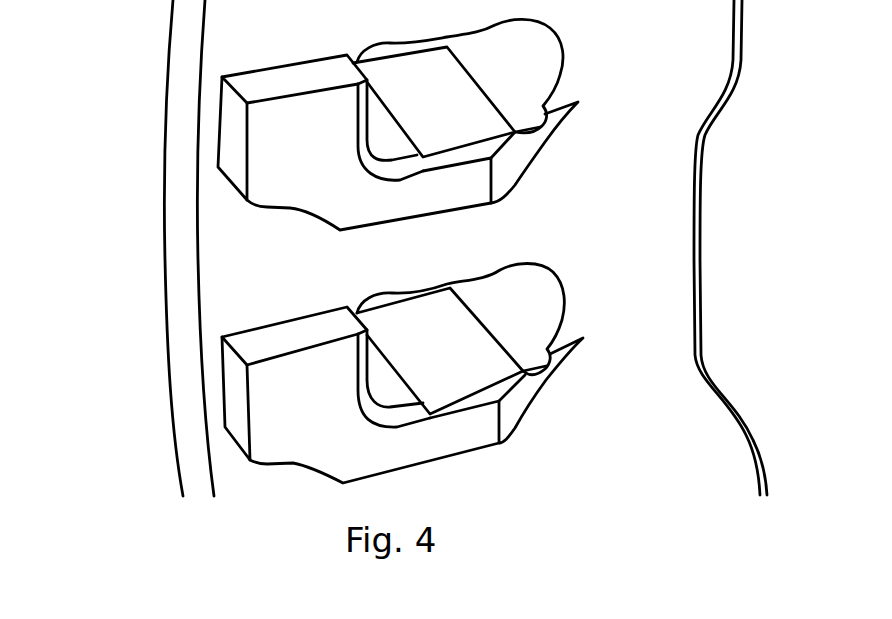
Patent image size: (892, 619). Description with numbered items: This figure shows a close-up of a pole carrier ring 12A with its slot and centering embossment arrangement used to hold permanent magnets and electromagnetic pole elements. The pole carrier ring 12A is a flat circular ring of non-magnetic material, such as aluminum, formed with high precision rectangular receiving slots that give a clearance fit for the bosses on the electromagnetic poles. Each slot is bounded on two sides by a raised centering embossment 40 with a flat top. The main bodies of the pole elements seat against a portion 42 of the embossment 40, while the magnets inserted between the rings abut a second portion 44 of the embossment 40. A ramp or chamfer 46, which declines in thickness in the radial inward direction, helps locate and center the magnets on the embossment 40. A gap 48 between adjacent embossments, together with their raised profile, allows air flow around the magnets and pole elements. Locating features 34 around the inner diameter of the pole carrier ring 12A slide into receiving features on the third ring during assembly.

The pole carrier ring 12A is at (183, 252).
The locating feature 34 is at (738, 78).
The centering embossment 40 is at (226, 295).
The portion of the embossment 42 is at (442, 362).
The second portion of the embossment 44 is at (463, 442).
The ramp or chamfer 46 is at (518, 403).
The gap 48 is at (398, 141).